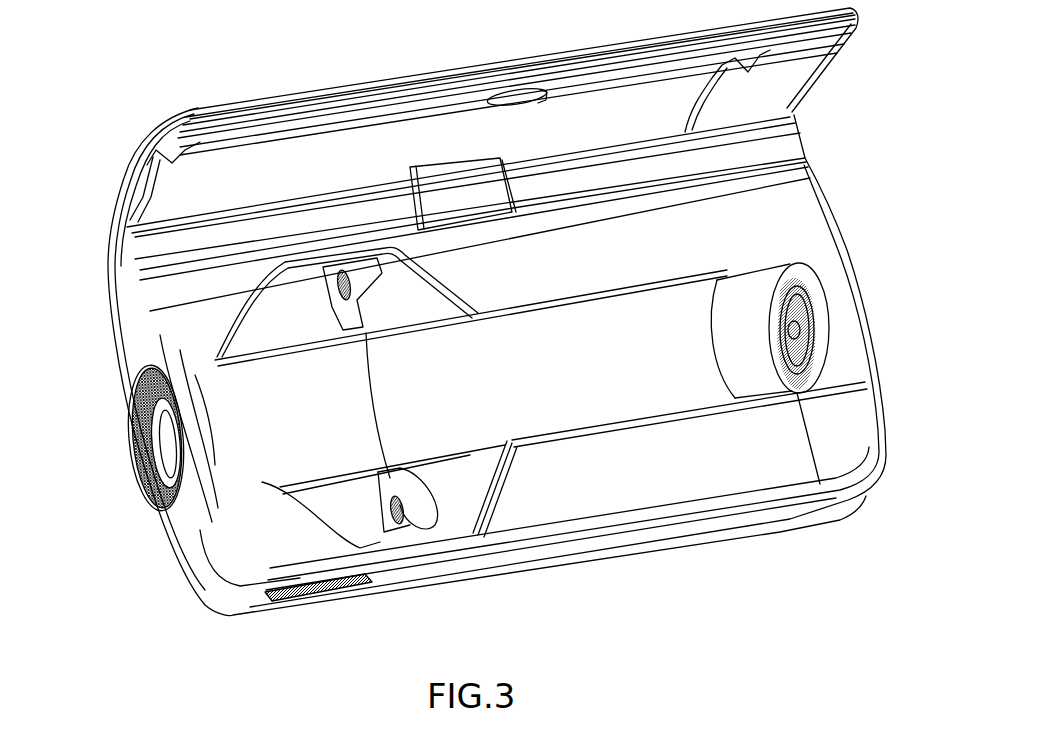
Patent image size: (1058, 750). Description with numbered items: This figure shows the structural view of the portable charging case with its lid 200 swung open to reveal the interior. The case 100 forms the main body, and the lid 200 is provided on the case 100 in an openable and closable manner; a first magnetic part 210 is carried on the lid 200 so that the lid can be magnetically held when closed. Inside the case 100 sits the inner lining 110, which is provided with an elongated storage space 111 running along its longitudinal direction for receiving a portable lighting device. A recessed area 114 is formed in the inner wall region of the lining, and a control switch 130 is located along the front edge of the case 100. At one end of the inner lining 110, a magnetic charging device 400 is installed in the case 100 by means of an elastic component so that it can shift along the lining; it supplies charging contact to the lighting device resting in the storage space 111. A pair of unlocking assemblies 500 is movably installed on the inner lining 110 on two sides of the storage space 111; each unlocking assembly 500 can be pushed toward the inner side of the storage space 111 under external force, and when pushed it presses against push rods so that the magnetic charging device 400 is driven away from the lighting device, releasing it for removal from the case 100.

The case 100 is at (848, 249).
The inner lining 110 is at (807, 212).
The storage space 111 is at (260, 468).
The recessed area 114 is at (272, 312).
The control switch 130 is at (367, 593).
The lid 200 is at (400, 98).
The first magnetic part 210 is at (522, 98).
The magnetic charging device 400 is at (832, 333).
The unlocking assembly 500 is at (402, 518).